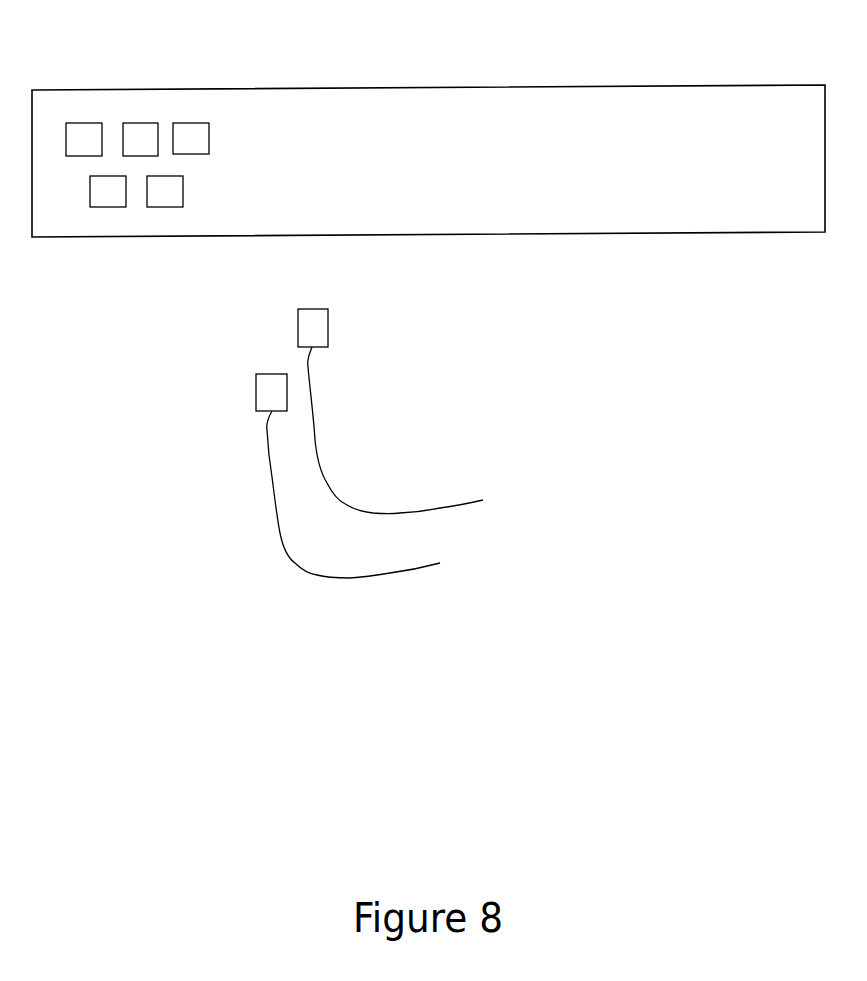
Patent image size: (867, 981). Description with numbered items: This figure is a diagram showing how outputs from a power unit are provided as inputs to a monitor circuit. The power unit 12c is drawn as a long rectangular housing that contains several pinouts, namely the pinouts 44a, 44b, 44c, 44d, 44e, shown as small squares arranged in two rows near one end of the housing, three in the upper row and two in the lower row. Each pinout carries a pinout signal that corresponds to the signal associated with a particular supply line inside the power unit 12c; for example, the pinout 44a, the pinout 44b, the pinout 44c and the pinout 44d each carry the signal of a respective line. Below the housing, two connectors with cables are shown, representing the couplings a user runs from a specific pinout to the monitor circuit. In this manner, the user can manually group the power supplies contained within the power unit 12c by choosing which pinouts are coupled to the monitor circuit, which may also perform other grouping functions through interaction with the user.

The power unit 12c is at (468, 186).
The pinout 44a is at (85, 123).
The pinout 44b is at (140, 123).
The pinout 44c is at (192, 123).
The pinout 44d is at (107, 207).
The pinout 44e is at (165, 207).